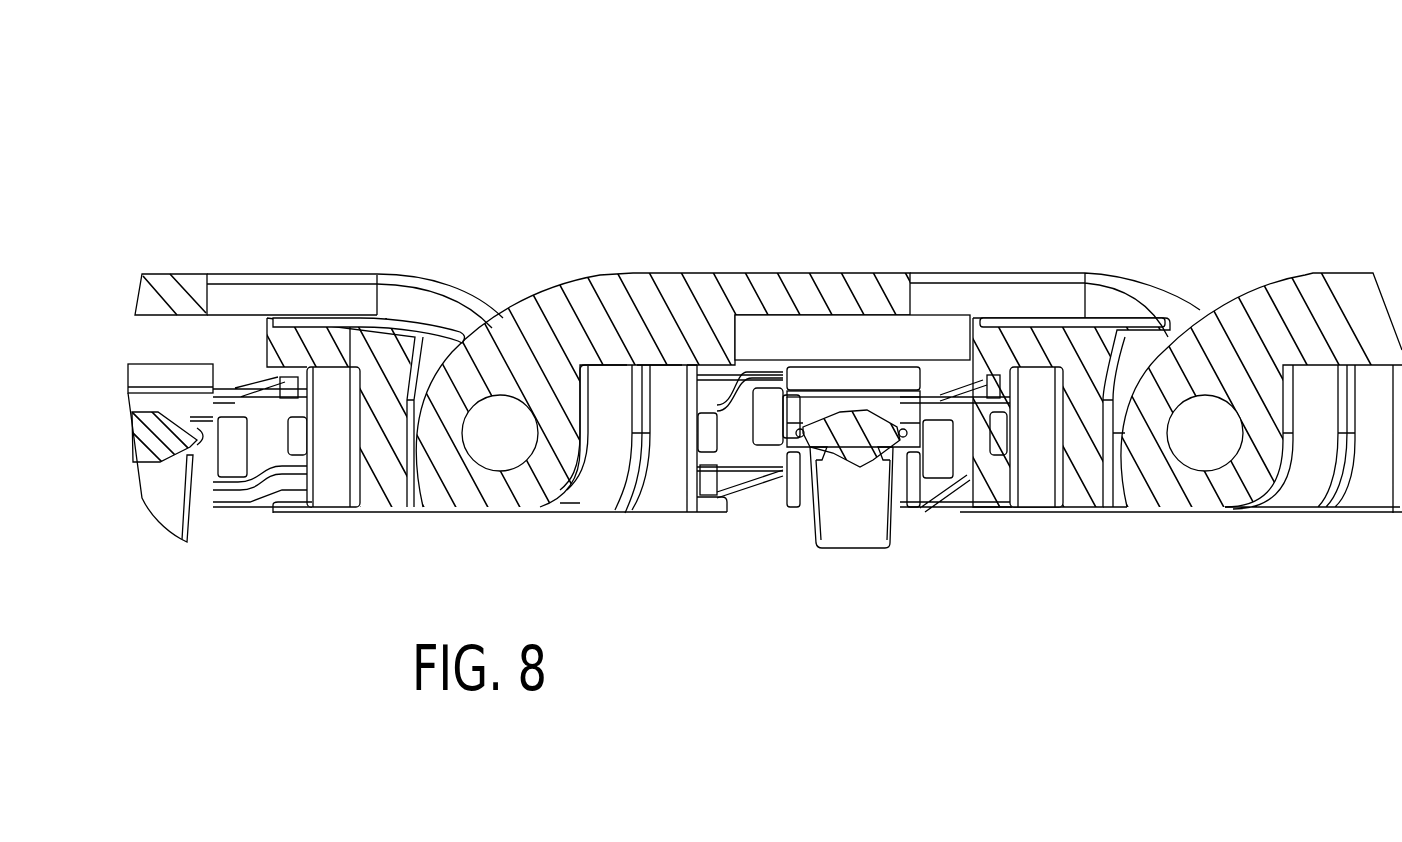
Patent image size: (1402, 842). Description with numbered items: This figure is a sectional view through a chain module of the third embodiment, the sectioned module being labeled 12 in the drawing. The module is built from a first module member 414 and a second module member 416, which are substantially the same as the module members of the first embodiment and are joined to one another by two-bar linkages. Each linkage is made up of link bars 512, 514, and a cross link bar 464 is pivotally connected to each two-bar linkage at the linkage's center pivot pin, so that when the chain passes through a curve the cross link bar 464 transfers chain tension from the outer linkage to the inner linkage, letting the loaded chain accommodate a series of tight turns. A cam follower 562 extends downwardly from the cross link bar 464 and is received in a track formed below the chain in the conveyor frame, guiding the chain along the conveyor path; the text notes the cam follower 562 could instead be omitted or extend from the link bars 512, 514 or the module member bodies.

The hinge assembly 12 is at (703, 336).
The first module member 414 is at (552, 295).
The second module member 416 is at (1133, 300).
The link bar 512 is at (735, 455).
The link bar 514 is at (960, 460).
The cross link bar 464 is at (843, 452).
The cam follower 562 is at (875, 518).